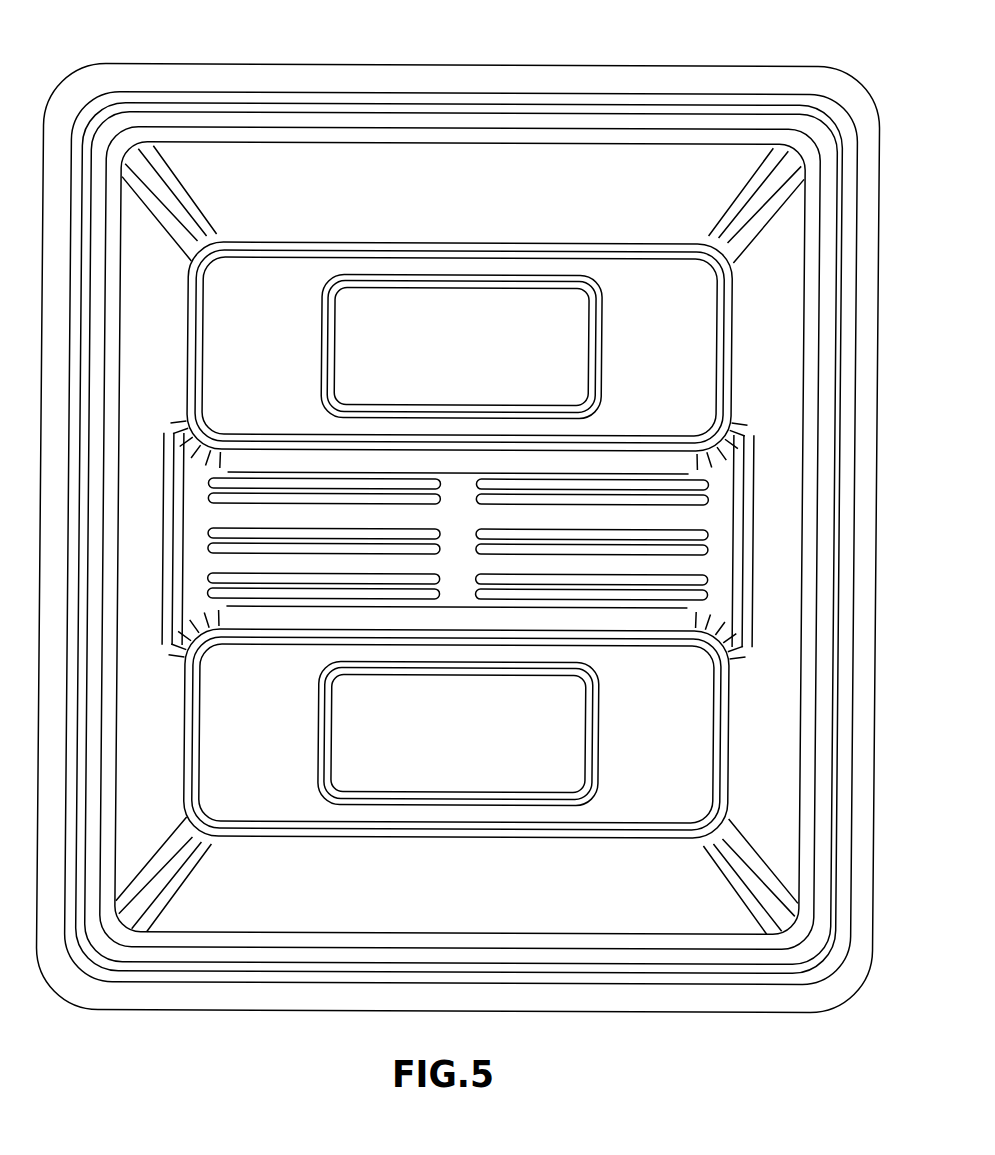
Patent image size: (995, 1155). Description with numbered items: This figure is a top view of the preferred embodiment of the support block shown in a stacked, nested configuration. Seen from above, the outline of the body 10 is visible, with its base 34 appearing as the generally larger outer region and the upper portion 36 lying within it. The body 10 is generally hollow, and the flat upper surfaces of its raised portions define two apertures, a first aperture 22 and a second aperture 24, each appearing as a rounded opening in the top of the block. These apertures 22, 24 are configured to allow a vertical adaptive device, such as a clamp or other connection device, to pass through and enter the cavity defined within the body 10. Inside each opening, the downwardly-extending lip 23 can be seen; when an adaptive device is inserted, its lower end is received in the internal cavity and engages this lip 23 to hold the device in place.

The body 10 is at (458, 509).
The aperture 22 is at (403, 302).
The downwardly-extending lip 23 is at (470, 283).
The aperture 24 is at (396, 763).
The base 34 is at (90, 90).
The upper portion 36 is at (267, 208).